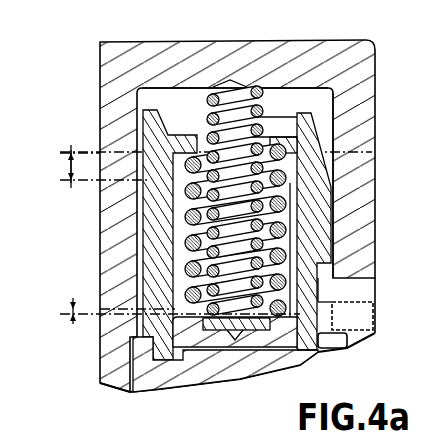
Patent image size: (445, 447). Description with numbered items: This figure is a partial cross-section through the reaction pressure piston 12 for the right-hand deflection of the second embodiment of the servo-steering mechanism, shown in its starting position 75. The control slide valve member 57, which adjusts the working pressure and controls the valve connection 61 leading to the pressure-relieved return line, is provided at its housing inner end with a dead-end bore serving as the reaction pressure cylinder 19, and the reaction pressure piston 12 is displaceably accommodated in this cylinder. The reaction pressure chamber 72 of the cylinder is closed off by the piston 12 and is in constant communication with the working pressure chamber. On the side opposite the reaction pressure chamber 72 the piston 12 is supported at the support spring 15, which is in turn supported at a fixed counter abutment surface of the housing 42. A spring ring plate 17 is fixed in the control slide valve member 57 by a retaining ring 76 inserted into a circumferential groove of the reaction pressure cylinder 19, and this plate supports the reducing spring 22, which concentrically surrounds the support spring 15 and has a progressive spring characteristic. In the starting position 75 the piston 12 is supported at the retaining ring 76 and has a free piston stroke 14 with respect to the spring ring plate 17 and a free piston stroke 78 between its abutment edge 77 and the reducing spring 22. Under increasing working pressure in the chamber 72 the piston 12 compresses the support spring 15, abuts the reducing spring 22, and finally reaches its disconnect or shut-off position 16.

The housing 42 is at (277, 55).
The support spring 15 is at (287, 98).
The control slide valve member 57 is at (322, 128).
The spring ring plate 17 is at (372, 152).
The retaining ring 76 is at (172, 137).
The disconnect or shut-off position 16 is at (93, 150).
The free piston stroke 14 is at (70, 164).
The starting position 75 is at (97, 183).
The reaction pressure cylinder 19 is at (152, 228).
The valve connection 61 is at (357, 290).
The reducing spring 22 is at (320, 293).
The free piston stroke 78 is at (72, 339).
The reaction pressure piston 12 is at (227, 352).
The reaction pressure chamber 72 is at (254, 352).
The abutment edge 77 is at (302, 350).